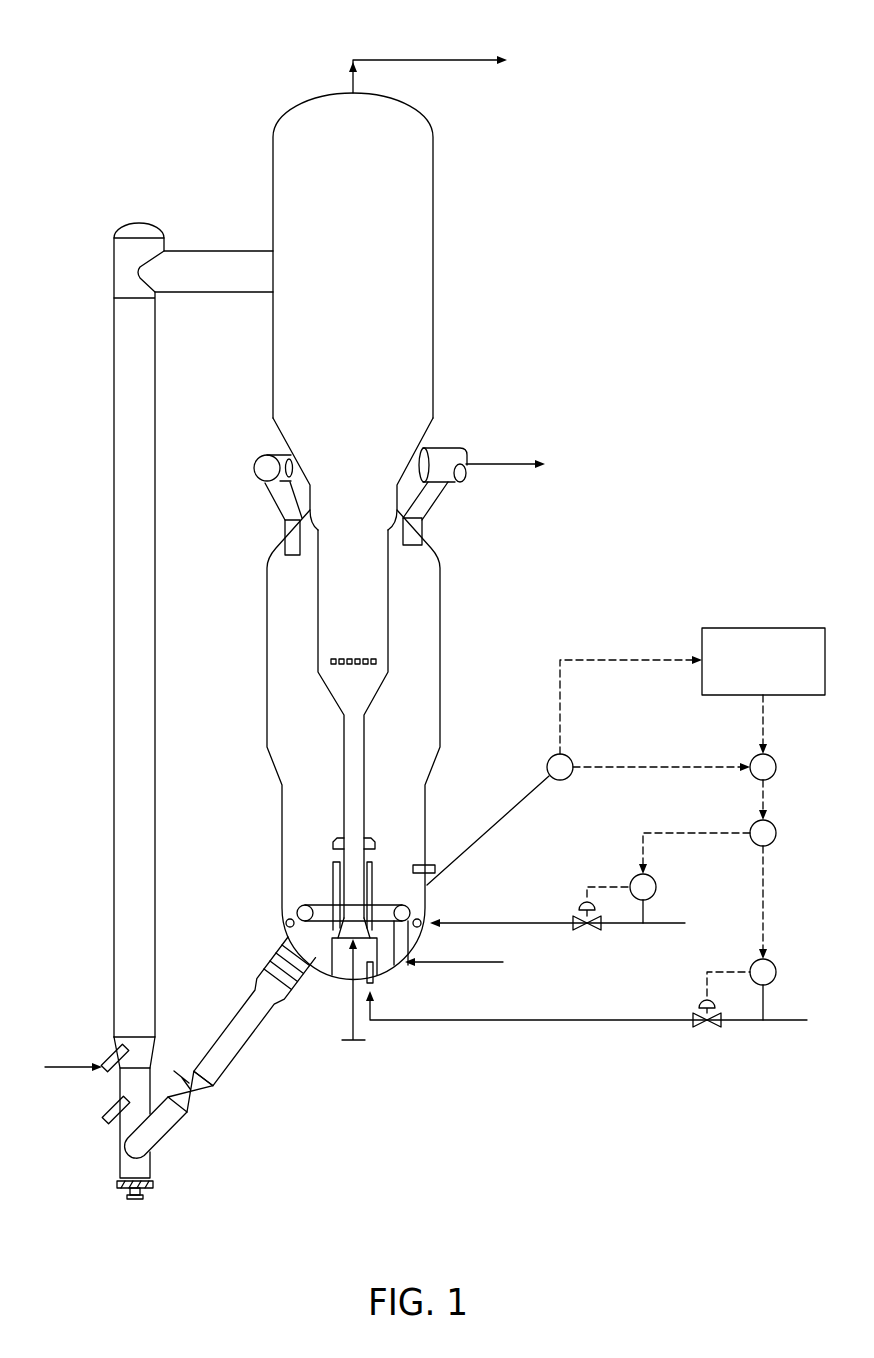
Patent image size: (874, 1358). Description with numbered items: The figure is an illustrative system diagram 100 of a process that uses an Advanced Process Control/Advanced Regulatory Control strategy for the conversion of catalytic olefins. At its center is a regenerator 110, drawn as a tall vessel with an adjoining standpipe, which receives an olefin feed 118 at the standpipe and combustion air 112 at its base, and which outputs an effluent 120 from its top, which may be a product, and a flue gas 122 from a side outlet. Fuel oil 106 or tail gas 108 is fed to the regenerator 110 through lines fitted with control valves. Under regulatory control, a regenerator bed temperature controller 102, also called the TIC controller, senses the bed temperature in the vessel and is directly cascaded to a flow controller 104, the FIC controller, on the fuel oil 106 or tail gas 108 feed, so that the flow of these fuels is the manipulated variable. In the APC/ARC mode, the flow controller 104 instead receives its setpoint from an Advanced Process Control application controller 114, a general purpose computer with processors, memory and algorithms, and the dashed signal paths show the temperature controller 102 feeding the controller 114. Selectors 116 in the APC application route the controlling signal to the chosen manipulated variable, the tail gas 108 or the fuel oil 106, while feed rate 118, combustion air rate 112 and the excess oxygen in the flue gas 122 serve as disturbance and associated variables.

The system diagram 100 is at (146, 66).
The regenerator bed temperature controller 102 is at (569, 757).
The flow controller 104 is at (656, 887).
The fuel oil 106 is at (571, 1022).
The tail gas 108 is at (535, 921).
The regenerator 110 is at (427, 902).
The combustion air 112 is at (465, 964).
The Advanced Process Control application controller 114 is at (764, 628).
The selectors 116 is at (776, 767).
The olefin feed 118 is at (54, 1066).
The effluent 120 is at (429, 58).
The flue gas 122 is at (505, 463).